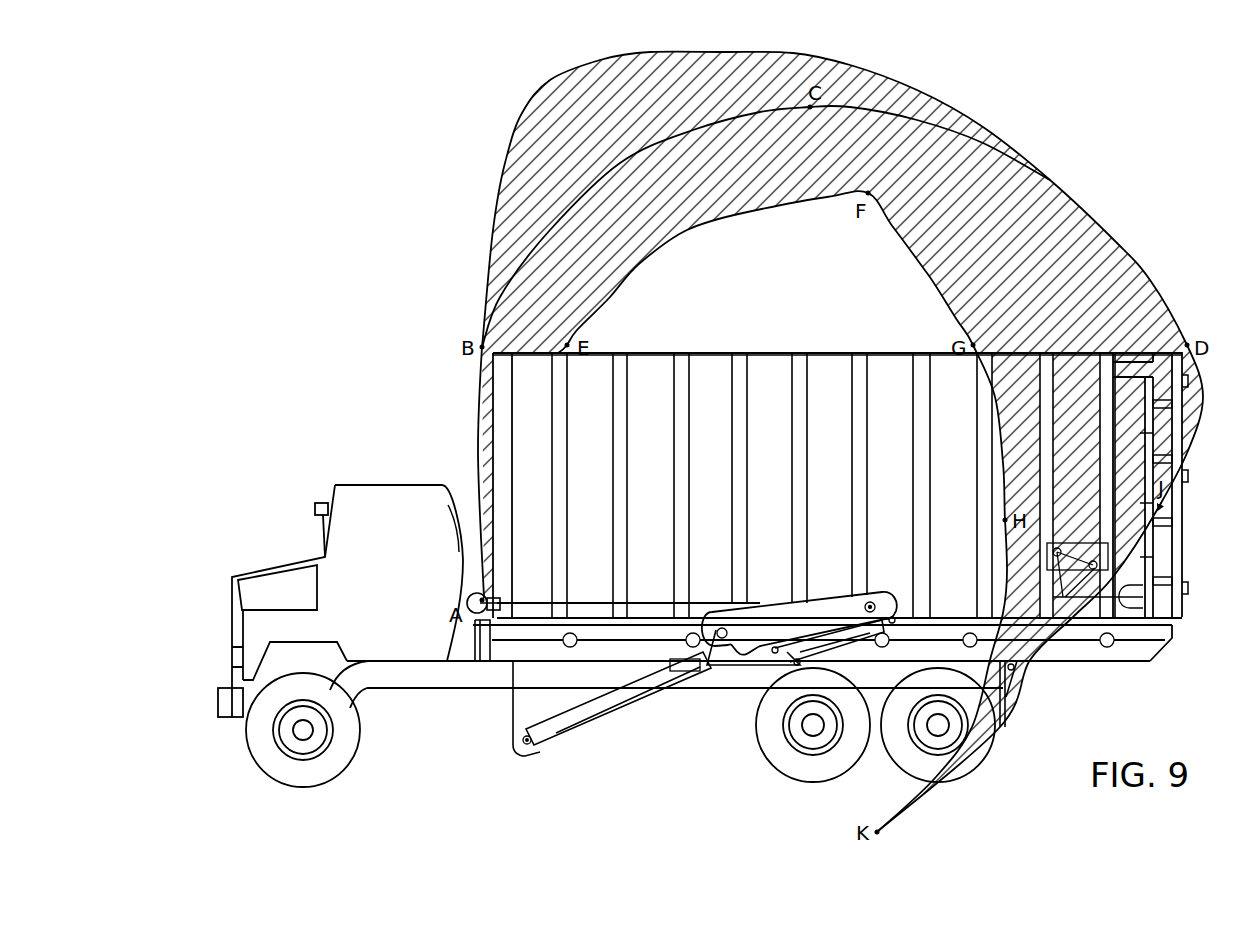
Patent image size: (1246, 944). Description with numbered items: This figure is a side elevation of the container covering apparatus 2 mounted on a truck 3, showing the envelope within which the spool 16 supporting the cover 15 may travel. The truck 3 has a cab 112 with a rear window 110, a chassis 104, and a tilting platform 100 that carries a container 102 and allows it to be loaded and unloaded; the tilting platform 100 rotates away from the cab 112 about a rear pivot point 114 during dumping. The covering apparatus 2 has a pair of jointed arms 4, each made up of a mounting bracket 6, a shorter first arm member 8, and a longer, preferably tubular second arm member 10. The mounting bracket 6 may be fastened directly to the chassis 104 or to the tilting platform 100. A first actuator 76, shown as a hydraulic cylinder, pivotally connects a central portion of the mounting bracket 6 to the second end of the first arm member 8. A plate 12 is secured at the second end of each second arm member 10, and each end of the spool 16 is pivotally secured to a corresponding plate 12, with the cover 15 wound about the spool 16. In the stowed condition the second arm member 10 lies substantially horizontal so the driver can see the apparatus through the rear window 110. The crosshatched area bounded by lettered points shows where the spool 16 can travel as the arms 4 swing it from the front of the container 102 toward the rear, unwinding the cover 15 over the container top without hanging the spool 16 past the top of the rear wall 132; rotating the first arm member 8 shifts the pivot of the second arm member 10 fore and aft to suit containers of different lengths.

The container covering apparatus 2 is at (770, 565).
The truck 3 is at (297, 525).
The jointed arms 4 is at (826, 585).
The mounting bracket 6 is at (752, 667).
The first arm member 8 is at (766, 638).
The second arm member 10 is at (647, 600).
The plate 12 is at (495, 622).
The cover 15 is at (477, 594).
The spool 16 is at (473, 598).
The first actuator 76 is at (847, 640).
The tilting platform 100 is at (650, 652).
The container 102 is at (650, 355).
The chassis 104 is at (413, 680).
The rear window 110 is at (452, 535).
The cab 112 is at (386, 491).
The rear pivot point 114 is at (1017, 667).
The rear wall 132 is at (1175, 612).